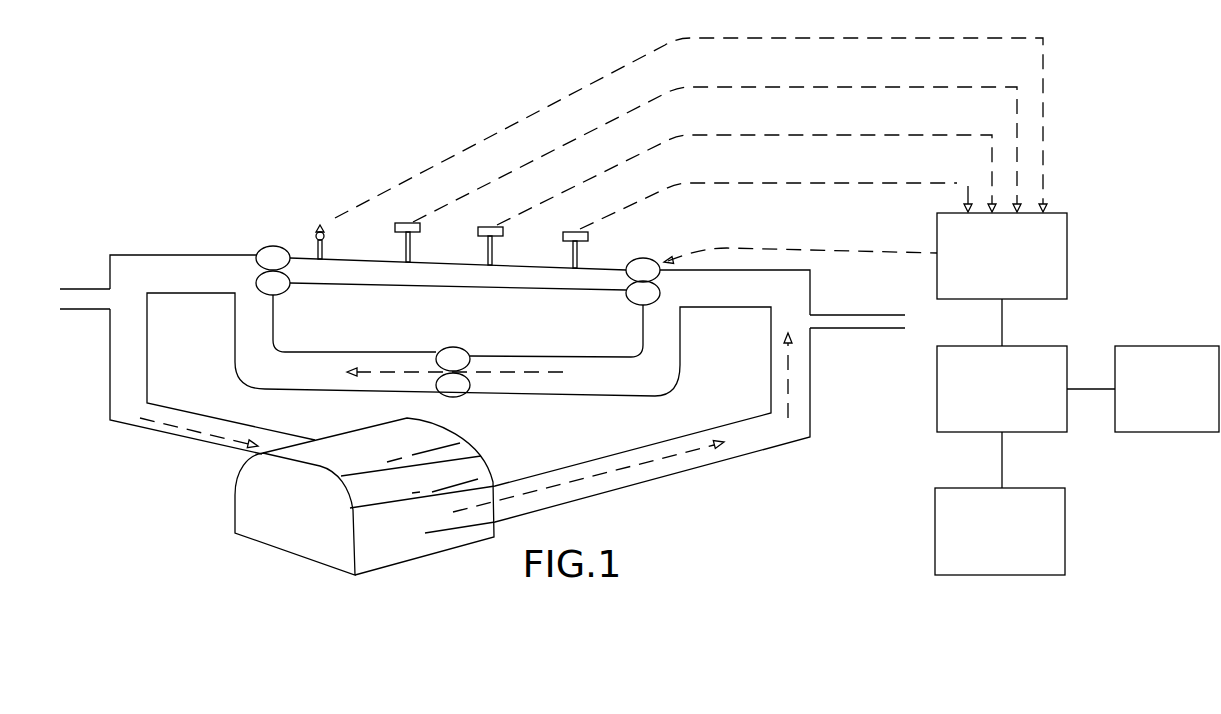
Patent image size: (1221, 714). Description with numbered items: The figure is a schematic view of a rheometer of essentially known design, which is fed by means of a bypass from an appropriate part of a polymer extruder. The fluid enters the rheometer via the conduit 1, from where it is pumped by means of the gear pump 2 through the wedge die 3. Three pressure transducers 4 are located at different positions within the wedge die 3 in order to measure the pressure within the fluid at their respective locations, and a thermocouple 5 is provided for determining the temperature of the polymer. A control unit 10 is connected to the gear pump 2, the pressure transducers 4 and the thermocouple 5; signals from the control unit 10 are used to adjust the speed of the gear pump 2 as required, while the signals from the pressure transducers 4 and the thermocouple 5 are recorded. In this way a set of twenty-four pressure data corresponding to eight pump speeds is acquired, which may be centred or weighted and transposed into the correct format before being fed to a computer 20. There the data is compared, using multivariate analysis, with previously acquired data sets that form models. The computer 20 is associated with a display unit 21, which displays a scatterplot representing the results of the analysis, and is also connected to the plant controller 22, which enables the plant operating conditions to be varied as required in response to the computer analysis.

The conduit 1 is at (663, 475).
The gear pump 2 is at (645, 258).
The wedge die 3 is at (365, 275).
The pressure transducers 4 is at (395, 227).
The thermocouple 5 is at (320, 225).
The control unit 10 is at (1067, 233).
The computer 20 is at (937, 380).
The display unit 21 is at (1140, 433).
The plant controller 22 is at (1035, 576).